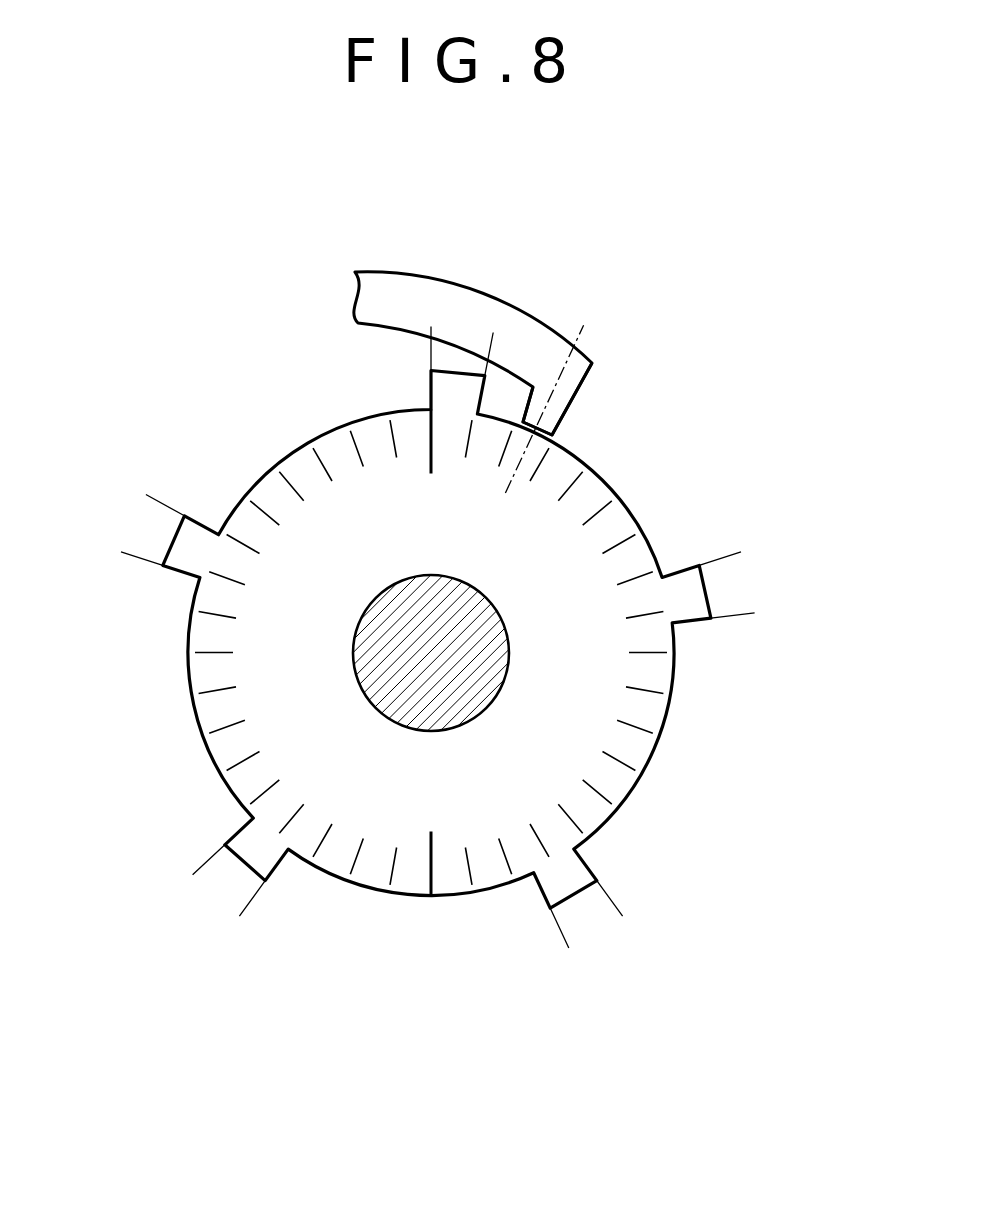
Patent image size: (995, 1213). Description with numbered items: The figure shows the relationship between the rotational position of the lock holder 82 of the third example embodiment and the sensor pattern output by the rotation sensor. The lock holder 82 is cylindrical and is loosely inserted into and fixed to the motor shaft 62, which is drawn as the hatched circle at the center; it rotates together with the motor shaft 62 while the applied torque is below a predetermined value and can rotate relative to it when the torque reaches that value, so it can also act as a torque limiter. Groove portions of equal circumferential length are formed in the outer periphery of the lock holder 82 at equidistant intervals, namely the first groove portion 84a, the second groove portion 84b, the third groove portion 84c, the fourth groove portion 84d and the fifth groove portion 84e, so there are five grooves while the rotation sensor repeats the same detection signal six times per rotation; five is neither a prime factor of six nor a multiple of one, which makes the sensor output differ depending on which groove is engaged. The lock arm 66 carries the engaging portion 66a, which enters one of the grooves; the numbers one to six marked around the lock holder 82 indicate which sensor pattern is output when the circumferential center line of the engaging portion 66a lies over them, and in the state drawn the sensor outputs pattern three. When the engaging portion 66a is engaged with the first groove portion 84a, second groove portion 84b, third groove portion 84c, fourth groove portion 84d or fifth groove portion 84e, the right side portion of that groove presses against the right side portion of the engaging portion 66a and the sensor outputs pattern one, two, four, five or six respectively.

The motor shaft 62 is at (460, 729).
The lock arm 66 is at (465, 288).
The engaging portion 66a is at (598, 410).
The lock holder 82 is at (668, 710).
The first groove portion 84a is at (490, 348).
The second groove portion 84b is at (739, 615).
The third groove portion 84c is at (562, 934).
The fourth groove portion 84d is at (127, 570).
The fifth groove portion 84e is at (416, 338).